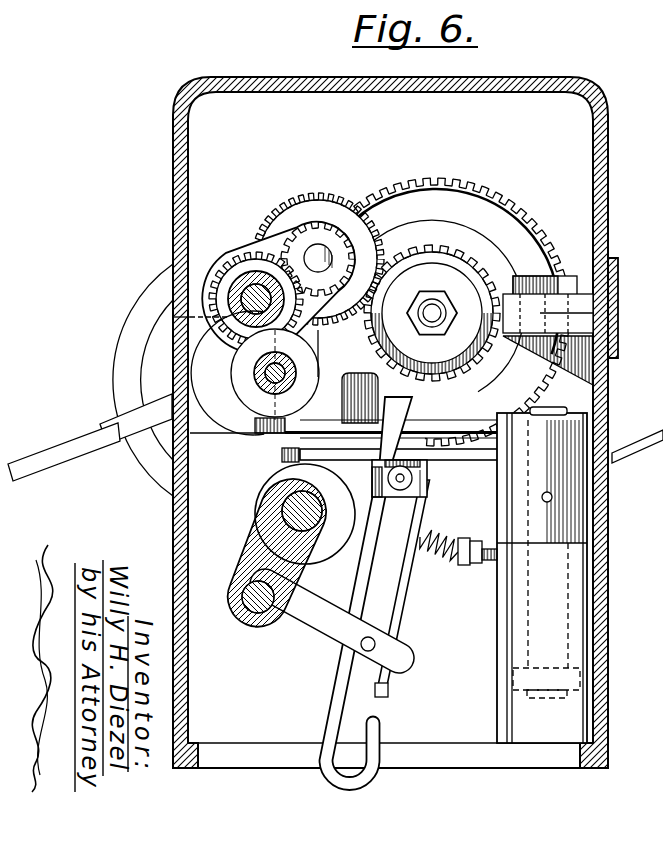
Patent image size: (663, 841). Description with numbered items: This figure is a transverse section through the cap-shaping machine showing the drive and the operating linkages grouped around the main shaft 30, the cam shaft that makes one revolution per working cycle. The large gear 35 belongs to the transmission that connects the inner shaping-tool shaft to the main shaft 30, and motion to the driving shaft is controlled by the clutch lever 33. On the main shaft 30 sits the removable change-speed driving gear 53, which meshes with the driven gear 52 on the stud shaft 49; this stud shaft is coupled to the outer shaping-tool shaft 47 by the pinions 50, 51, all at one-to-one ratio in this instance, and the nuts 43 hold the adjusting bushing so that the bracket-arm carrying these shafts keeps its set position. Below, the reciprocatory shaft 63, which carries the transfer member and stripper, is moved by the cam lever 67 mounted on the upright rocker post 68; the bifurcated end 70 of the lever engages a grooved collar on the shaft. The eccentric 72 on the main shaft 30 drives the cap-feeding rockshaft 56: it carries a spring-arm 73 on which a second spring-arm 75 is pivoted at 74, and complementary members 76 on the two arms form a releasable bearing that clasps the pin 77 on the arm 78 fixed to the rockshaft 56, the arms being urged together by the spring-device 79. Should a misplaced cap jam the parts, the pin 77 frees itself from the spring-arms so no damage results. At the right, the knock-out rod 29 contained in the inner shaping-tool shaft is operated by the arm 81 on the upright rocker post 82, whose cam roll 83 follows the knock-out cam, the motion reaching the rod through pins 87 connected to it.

The knock-out rod 29 is at (262, 388).
The main shaft 30 is at (437, 307).
The clutch lever 33 is at (40, 451).
The gear 35 is at (474, 185).
The nuts 43 is at (252, 254).
The outer shaping-tool shaft 47 is at (250, 298).
The stud shaft 49 is at (318, 258).
The pinion 50 is at (290, 250).
The pinion 51 is at (347, 228).
The gear 52 is at (317, 193).
The gear 53 is at (440, 246).
The rockshaft 56 is at (247, 612).
The reciprocatory shaft 63 is at (300, 512).
The cam lever 67 is at (282, 458).
The upright rocker post 68 is at (566, 440).
The bifurcated end of cam lever 70 is at (352, 508).
The eccentric 72 is at (478, 391).
The spring-arm 73 is at (320, 762).
The pivot 74 is at (413, 478).
The second spring-arm 75 is at (406, 599).
The complementary members 76 is at (398, 630).
The pin 77 is at (376, 648).
The arm 78 is at (310, 634).
The spring-device 79 is at (446, 543).
The arm 81 is at (255, 434).
The upright rocker post 82 is at (578, 397).
The cam roll 83 is at (435, 437).
The pins 87 is at (280, 455).